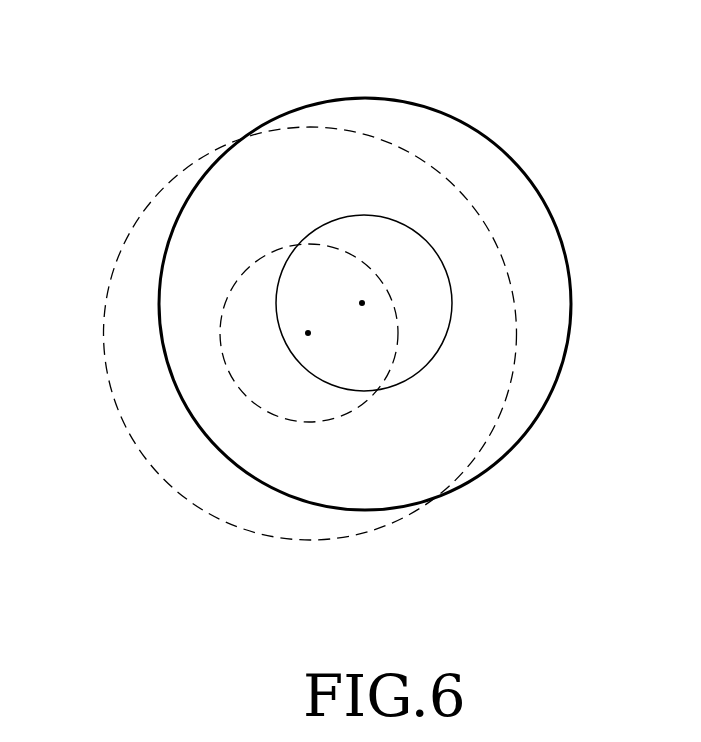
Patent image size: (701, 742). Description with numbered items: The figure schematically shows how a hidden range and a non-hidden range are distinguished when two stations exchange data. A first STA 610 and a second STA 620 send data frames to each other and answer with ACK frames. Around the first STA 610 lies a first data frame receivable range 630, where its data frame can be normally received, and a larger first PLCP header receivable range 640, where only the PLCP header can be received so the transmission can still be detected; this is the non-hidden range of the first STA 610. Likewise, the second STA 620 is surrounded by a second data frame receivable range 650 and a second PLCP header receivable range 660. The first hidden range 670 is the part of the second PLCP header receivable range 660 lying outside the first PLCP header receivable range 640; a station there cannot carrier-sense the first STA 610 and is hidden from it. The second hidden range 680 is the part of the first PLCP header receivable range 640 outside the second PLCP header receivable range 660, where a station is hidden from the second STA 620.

The first STA 610 is at (309, 360).
The second STA 620 is at (362, 277).
The first data frame receivable range 630 is at (233, 383).
The first PLCP header receivable range 640 is at (303, 542).
The second data frame receivable range 650 is at (451, 330).
The second PLCP header receivable range 660 is at (551, 210).
The first hidden range 670 is at (425, 132).
The second hidden range 680 is at (240, 483).